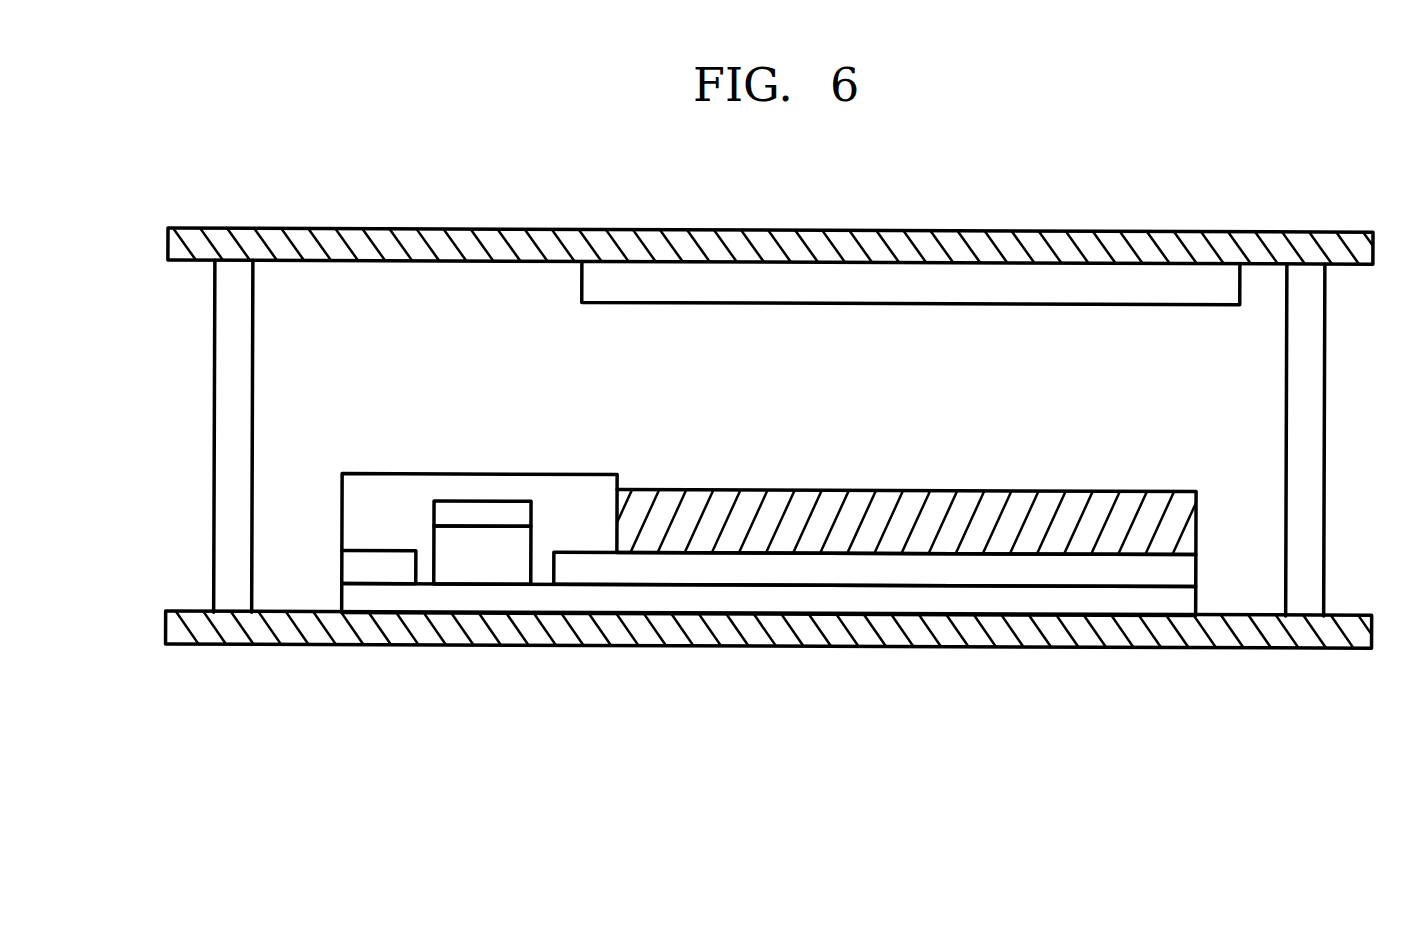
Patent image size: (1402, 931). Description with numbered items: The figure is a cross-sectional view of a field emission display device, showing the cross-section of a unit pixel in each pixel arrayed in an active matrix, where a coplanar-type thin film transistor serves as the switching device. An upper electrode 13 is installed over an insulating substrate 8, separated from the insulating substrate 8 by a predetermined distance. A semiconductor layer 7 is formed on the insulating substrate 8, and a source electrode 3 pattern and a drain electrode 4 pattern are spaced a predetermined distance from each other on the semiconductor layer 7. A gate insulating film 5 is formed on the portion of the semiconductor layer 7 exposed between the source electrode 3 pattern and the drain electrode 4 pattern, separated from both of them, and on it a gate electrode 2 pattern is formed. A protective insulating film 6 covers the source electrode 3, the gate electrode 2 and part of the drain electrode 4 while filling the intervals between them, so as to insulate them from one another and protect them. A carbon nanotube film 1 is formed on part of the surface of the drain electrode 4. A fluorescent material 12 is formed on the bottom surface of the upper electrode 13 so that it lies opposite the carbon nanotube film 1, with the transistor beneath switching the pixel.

The carbon nanotube film 1 is at (1190, 510).
The gate electrode 2 is at (438, 513).
The source electrode 3 is at (348, 568).
The drain electrode 4 is at (1195, 566).
The gate insulating film 5 is at (440, 538).
The protective insulating film 6 is at (382, 480).
The semiconductor layer 7 is at (348, 595).
The insulating substrate 8 is at (168, 626).
The fluorescent material 12 is at (590, 282).
The upper electrode 13 is at (170, 243).